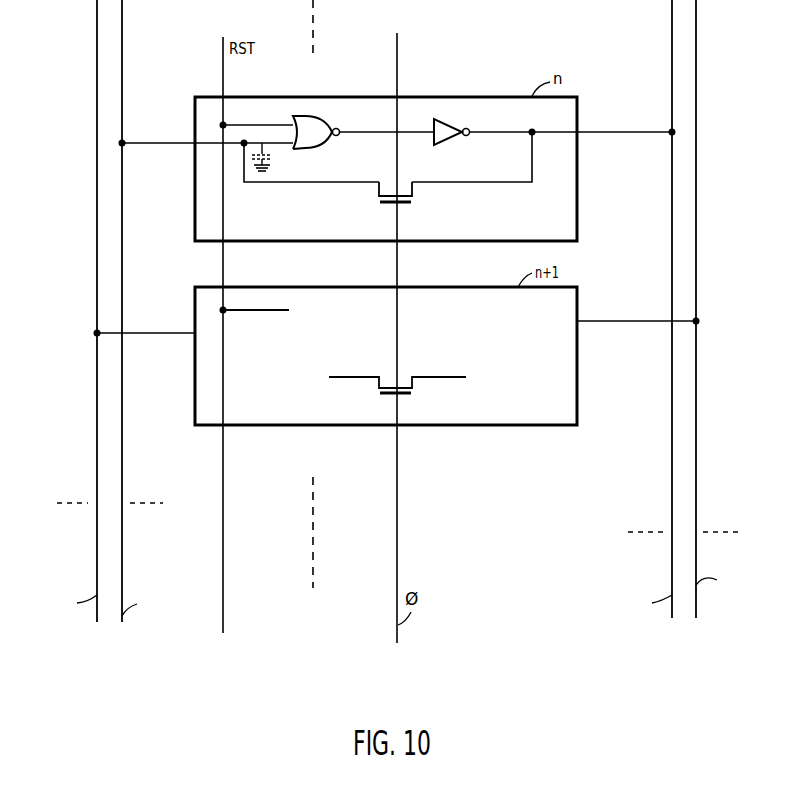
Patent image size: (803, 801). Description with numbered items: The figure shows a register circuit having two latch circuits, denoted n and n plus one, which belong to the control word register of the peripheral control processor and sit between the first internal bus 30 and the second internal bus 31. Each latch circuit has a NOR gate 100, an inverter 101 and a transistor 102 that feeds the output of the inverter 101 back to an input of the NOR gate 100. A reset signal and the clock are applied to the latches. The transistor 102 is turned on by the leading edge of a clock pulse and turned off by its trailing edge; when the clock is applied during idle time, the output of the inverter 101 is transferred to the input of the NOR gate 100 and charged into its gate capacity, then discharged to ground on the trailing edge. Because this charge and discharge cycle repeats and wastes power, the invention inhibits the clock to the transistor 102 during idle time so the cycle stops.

The NOR gate 100 is at (322, 119).
The inverter 101 is at (447, 119).
The transistor 102 is at (403, 188).
The first internal bus 30 is at (725, 650).
The second internal bus 31 is at (143, 650).